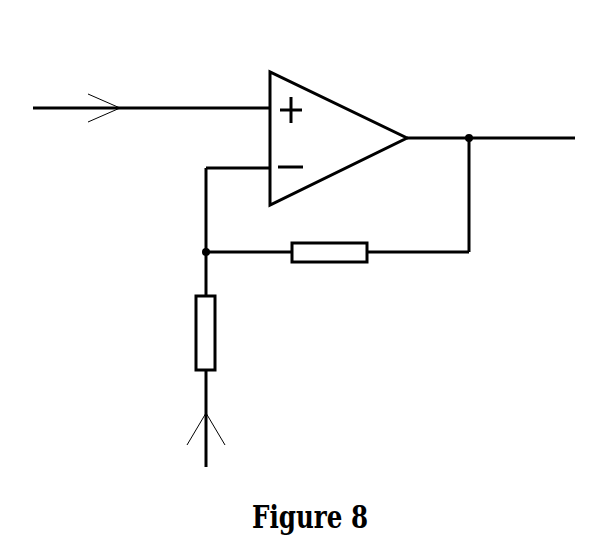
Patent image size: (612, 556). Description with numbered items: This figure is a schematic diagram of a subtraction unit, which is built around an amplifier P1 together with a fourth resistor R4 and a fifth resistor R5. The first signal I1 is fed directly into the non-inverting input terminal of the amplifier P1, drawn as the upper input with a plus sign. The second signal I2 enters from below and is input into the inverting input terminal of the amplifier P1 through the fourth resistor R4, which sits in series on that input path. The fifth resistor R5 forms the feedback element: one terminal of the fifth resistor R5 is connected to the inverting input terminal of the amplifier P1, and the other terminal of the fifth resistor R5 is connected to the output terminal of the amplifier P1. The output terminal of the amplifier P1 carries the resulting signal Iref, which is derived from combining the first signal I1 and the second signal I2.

The first signal I1 is at (146, 78).
The second signal I2 is at (175, 418).
The amplifier P1 is at (315, 184).
The signal Iref is at (492, 161).
The fourth resistor R4 is at (229, 333).
The fifth resistor R5 is at (335, 276).